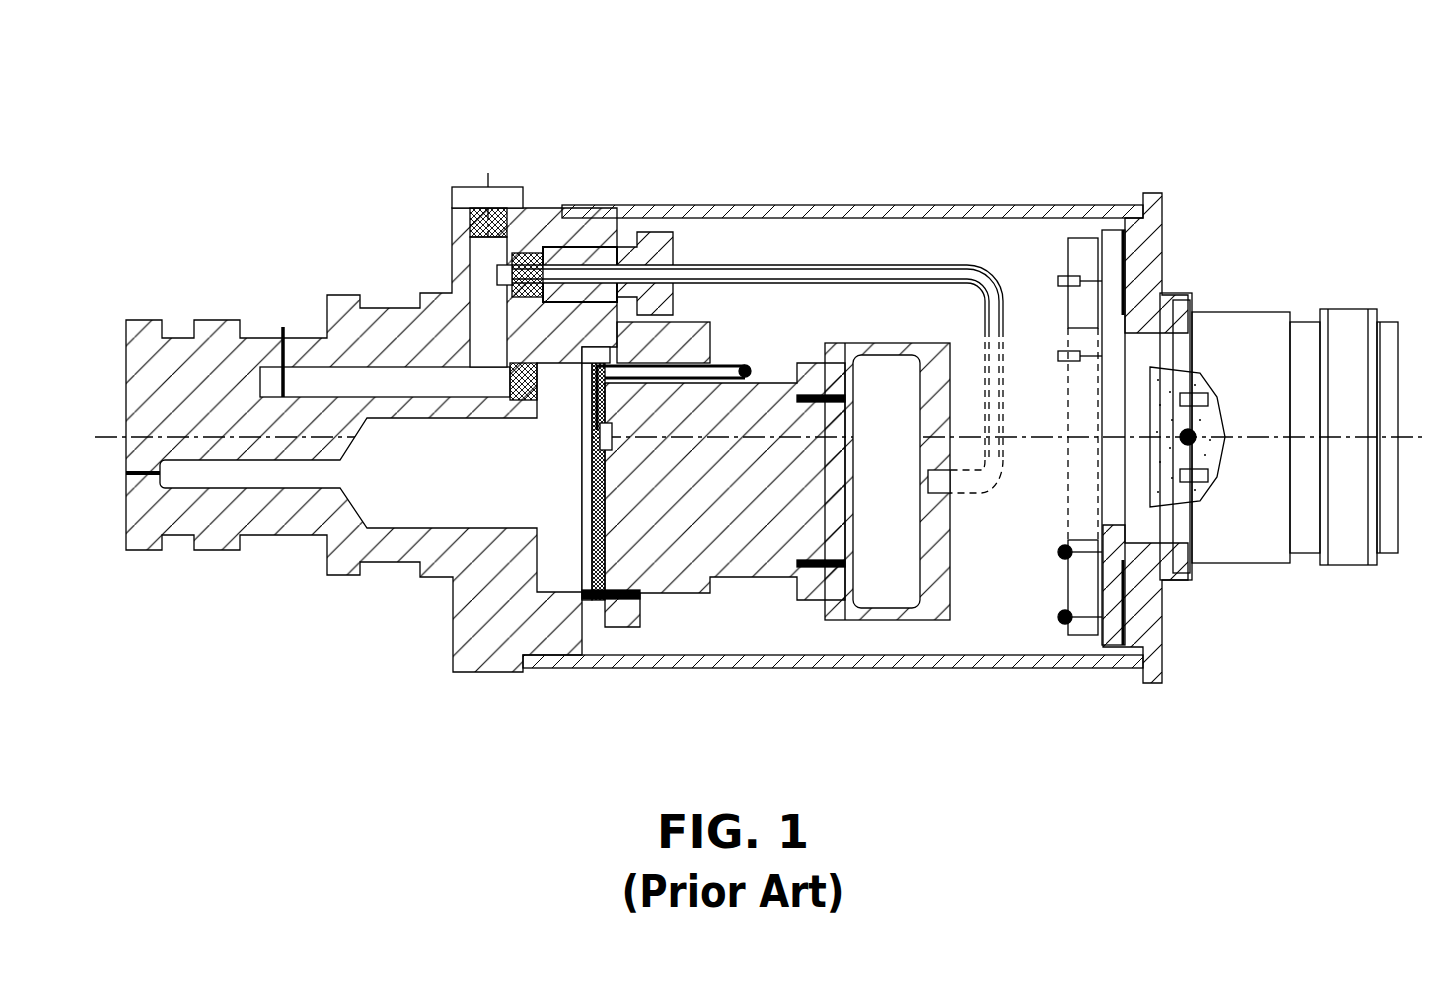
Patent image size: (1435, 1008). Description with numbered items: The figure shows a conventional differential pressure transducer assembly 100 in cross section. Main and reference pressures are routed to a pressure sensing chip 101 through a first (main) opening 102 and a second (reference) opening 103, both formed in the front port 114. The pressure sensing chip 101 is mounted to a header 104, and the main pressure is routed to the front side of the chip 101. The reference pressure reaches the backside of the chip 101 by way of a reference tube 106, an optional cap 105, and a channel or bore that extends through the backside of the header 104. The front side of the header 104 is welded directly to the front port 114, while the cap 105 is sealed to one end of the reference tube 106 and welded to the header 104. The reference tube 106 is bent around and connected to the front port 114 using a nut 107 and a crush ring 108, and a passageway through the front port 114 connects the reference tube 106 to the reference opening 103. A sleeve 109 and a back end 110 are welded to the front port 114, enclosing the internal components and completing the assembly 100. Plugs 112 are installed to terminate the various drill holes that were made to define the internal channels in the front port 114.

The differential pressure transducer assembly 100 is at (740, 379).
The pressure sensing chip 101 is at (604, 458).
The first (main) opening 102 is at (118, 473).
The second (reference) opening 103 is at (283, 320).
The header 104 is at (740, 523).
The cap 105 is at (927, 613).
The reference tube 106 is at (823, 268).
The nut 107 is at (662, 247).
The crush ring 108 is at (530, 247).
The sleeve 109 is at (945, 207).
The back end 110 is at (1345, 312).
The plugs 112 is at (518, 355).
The front port 114 is at (437, 553).